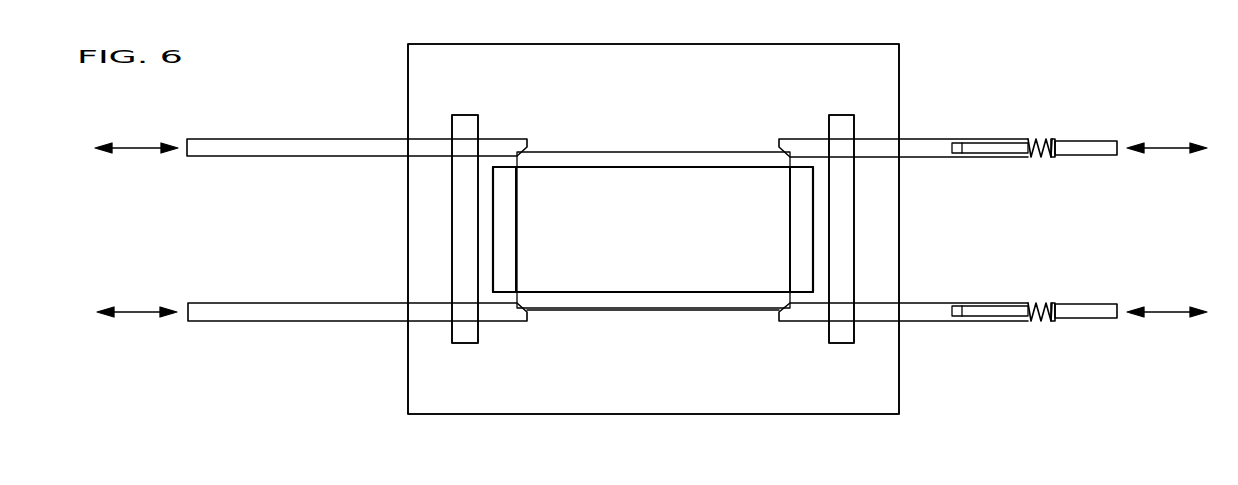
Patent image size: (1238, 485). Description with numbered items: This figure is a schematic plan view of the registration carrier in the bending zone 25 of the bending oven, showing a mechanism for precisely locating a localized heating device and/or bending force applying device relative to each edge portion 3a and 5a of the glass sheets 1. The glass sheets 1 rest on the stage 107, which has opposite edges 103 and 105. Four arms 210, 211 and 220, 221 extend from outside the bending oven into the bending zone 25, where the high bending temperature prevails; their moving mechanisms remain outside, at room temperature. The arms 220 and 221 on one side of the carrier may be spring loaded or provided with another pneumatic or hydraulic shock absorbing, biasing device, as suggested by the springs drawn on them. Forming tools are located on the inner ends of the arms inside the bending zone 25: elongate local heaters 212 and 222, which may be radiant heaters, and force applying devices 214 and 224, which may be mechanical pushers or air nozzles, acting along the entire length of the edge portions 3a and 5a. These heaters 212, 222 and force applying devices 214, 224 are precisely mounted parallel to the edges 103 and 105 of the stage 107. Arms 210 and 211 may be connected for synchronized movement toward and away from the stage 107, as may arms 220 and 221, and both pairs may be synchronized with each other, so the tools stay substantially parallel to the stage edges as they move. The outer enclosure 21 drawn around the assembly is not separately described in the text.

The glass sheets 1 is at (723, 177).
The edge portion 3a is at (506, 277).
The edge portion 5a is at (803, 278).
The edge of the stage 103 is at (516, 187).
The edge of the stage 105 is at (792, 247).
The stage 107 is at (667, 155).
The measurement jig housing 21 is at (902, 392).
The bending zone 25 is at (653, 229).
The arm 210 is at (268, 312).
The arm 211 is at (279, 148).
The local heater 212 is at (463, 287).
The force applying device 214 is at (465, 229).
The arm 220 is at (1042, 322).
The arm 221 is at (1040, 138).
The local heater 222 is at (843, 123).
The force applying device 224 is at (841, 229).